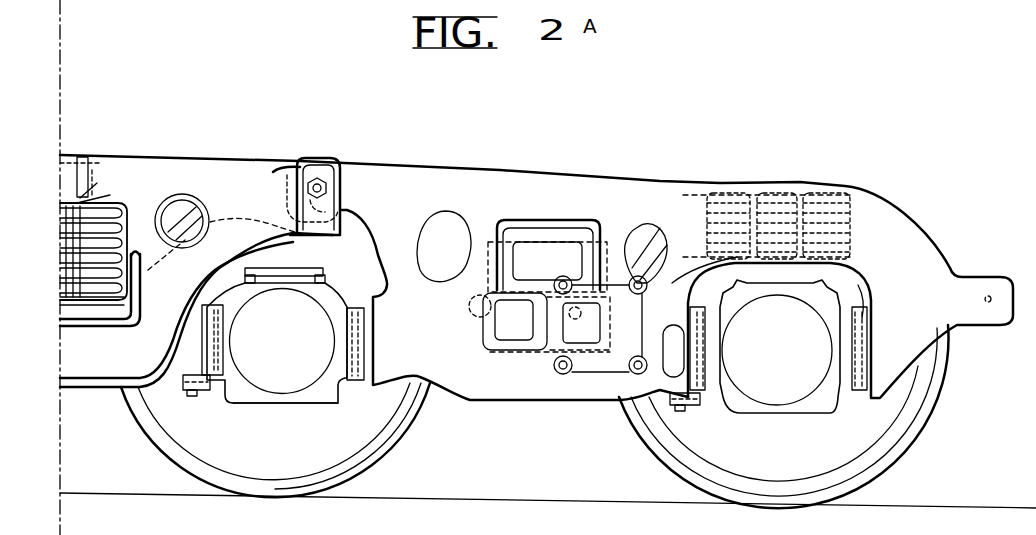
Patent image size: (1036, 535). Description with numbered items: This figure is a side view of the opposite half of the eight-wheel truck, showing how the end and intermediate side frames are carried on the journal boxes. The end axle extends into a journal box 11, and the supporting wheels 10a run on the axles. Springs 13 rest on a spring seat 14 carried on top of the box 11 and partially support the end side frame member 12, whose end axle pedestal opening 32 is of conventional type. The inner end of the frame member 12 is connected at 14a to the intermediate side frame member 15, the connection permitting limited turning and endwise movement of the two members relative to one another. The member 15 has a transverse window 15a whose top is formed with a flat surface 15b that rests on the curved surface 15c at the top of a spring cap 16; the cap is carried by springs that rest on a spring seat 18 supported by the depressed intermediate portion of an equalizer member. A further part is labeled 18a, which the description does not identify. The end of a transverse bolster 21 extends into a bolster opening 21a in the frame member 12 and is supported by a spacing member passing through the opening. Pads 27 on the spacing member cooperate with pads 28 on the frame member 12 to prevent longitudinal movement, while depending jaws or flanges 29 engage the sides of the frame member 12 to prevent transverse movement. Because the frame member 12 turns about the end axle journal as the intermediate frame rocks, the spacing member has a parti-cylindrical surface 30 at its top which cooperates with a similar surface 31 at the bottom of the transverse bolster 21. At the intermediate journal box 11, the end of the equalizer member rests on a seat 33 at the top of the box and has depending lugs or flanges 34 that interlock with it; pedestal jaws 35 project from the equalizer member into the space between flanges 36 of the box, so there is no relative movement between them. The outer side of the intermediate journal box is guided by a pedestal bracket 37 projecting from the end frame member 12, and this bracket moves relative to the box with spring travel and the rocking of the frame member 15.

The supporting wheels 10a is at (943, 433).
The journal boxes 11 is at (307, 404).
The end side frame members 12 is at (650, 188).
The springs 13 is at (732, 193).
The spring seats 14 is at (822, 274).
The connection 14a is at (323, 180).
The intermediate side frame members 15 is at (100, 168).
The transverse window 15a is at (140, 260).
The flat surface 15b is at (97, 183).
The curved surface 15c is at (156, 218).
The spring cap 16 is at (62, 218).
The spring seat 18 is at (62, 292).
The bracket arm 18a is at (113, 327).
The transverse bolsters 21 is at (527, 232).
The bolster openings 21a is at (582, 228).
The pads 27 is at (546, 321).
The pads 28 is at (497, 322).
The depending jaws or flanges 29 is at (535, 362).
The parti-cylindrical surface 30 is at (547, 290).
The parti-cylindrical surface 31 is at (533, 283).
The end axle pedestal openings 32 is at (847, 293).
The seats 33 is at (290, 270).
The depending lugs or flanges 34 is at (245, 279).
The pedestal jaws 35 is at (187, 386).
The flanges 36 is at (238, 405).
The pedestal brackets 37 is at (380, 386).